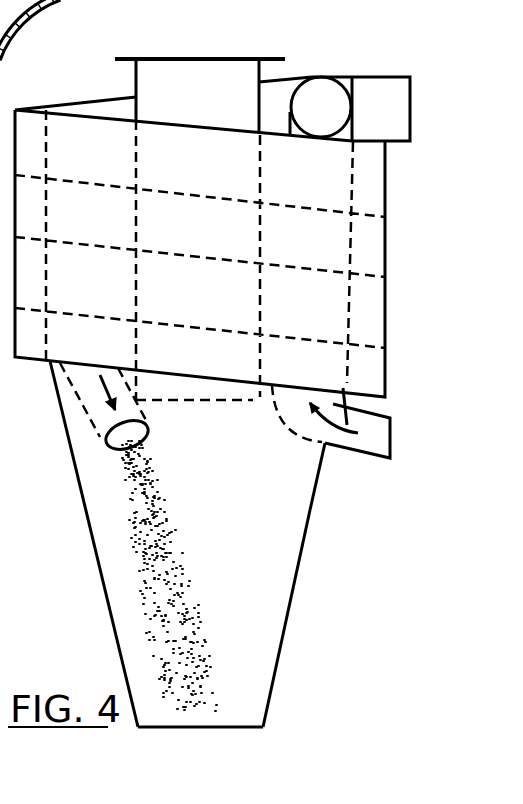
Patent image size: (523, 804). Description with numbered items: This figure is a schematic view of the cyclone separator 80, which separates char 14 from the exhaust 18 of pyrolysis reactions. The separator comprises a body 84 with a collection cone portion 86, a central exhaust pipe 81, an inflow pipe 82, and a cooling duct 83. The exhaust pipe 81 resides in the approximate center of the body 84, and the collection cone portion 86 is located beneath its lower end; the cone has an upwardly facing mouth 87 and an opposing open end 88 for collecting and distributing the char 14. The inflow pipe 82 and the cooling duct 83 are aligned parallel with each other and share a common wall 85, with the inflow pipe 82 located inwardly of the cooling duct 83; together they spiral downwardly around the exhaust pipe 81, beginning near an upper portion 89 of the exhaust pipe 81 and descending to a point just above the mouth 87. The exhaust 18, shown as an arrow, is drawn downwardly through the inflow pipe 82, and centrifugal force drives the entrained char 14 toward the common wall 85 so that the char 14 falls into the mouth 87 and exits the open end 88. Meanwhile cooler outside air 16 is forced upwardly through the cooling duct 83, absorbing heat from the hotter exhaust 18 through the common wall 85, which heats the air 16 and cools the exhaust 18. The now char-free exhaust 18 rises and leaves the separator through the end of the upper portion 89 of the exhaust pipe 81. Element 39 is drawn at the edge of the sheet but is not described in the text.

The char 14 is at (155, 533).
The air 16 is at (343, 398).
The exhaust 18 is at (100, 375).
The wheel 39 is at (0, 57).
The cyclone separator 80 is at (418, 230).
The exhaust pipe 81 is at (174, 59).
The inflow pipe 82 is at (318, 102).
The cooling duct 83 is at (395, 108).
The body 84 is at (72, 455).
The common wall 85 is at (355, 102).
The collection cone portion 86 is at (315, 525).
The mouth 87 is at (330, 460).
The open end 88 is at (237, 727).
The upper portion 89 is at (215, 80).